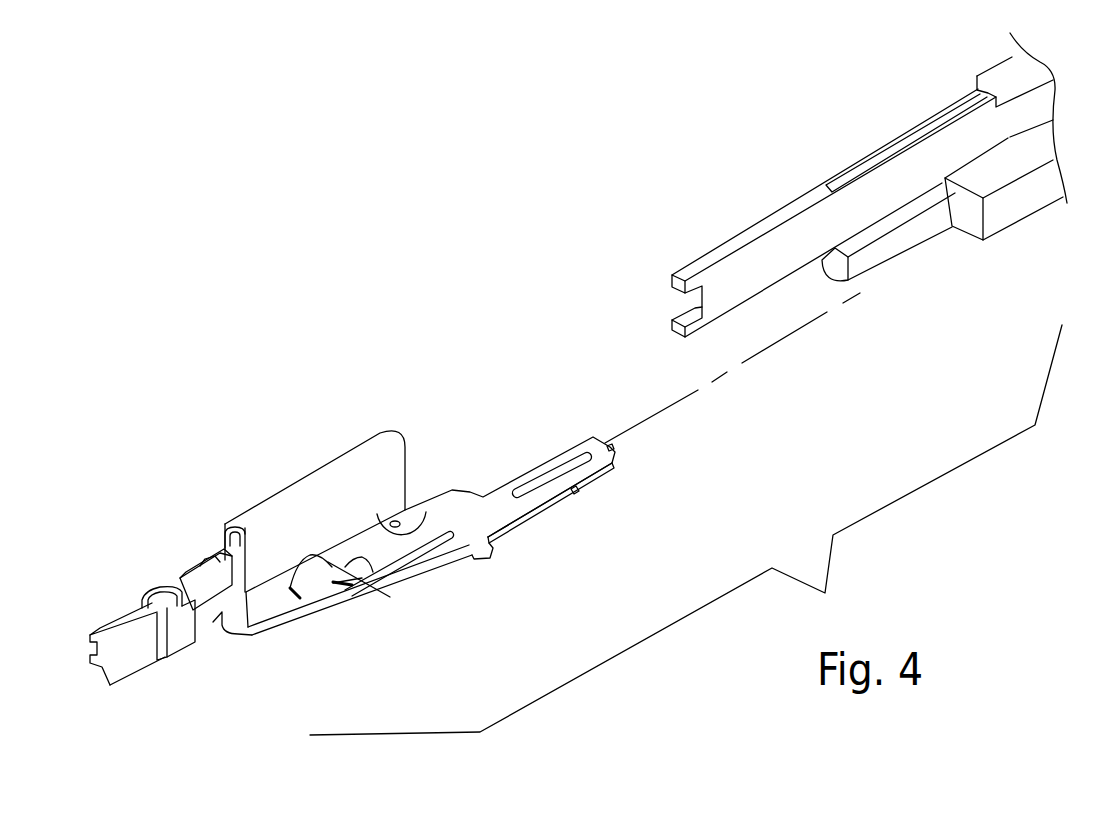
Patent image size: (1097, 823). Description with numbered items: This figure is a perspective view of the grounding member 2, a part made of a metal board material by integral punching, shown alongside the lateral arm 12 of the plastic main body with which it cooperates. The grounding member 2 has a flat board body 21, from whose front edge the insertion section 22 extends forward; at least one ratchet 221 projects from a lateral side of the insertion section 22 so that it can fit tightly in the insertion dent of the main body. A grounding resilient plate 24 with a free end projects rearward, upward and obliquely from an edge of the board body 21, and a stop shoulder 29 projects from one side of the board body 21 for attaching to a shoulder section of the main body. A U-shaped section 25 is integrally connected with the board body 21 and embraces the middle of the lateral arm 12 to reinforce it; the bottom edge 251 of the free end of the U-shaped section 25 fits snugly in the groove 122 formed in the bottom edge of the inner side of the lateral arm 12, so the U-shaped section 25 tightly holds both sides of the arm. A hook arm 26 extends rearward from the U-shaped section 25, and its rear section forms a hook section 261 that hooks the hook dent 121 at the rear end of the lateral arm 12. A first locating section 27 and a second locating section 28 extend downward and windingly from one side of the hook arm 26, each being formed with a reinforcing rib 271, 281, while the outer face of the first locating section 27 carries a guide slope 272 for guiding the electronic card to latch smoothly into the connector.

The grounding member 2 is at (366, 554).
The lateral arm 12 is at (839, 185).
The hook dent 121 is at (690, 298).
The groove 122 is at (988, 123).
The board body 21 is at (490, 517).
The insertion section 22 is at (512, 477).
The ratchet 221 is at (537, 465).
The grounding resilient plate 24 is at (363, 577).
The U-shaped section 25 is at (313, 478).
The bottom edge 251 is at (408, 528).
The hook arm 26 is at (124, 645).
The hook section 261 is at (98, 633).
The first locating section 27 is at (246, 581).
The reinforcing rib 271 is at (205, 565).
The guide slope 272 is at (230, 575).
The second locating section 28 is at (190, 608).
The reinforcing rib 281 is at (165, 592).
The stop shoulder 29 is at (493, 557).